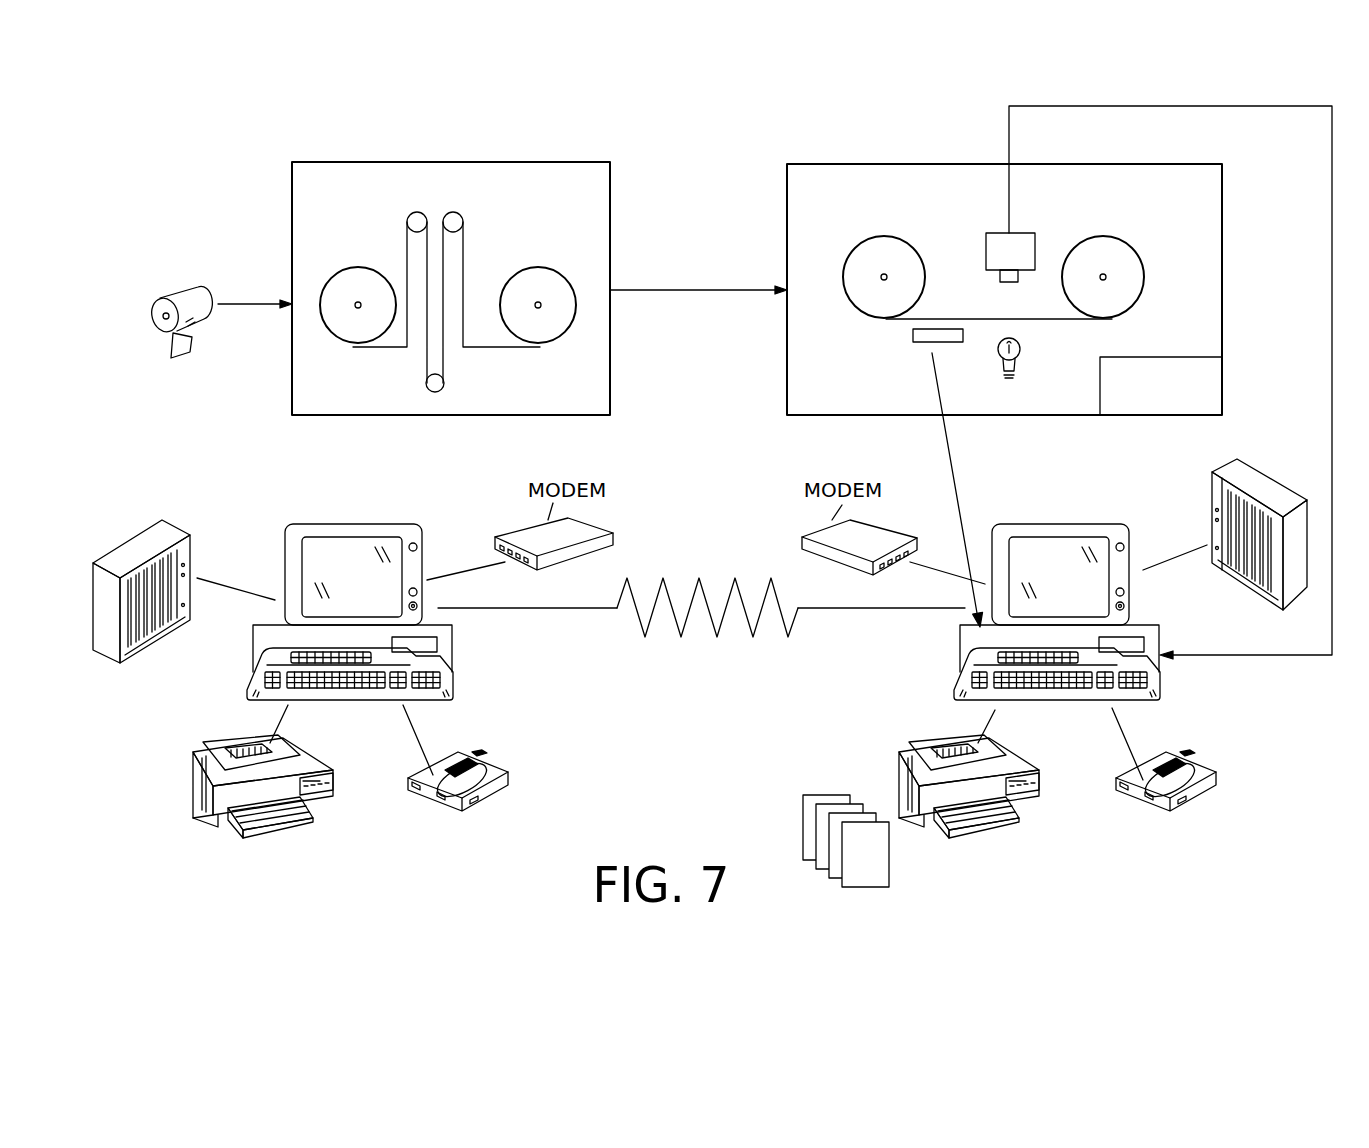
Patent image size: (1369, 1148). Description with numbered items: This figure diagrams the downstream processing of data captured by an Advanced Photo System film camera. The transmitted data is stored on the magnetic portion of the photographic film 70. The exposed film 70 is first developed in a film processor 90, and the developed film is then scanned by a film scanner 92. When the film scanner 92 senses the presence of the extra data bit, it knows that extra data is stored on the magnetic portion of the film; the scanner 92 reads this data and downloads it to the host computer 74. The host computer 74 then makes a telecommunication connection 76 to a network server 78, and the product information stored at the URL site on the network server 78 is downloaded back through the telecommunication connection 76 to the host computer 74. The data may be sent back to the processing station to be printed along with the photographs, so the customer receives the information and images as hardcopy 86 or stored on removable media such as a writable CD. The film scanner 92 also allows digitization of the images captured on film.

The photographic film 70 is at (175, 290).
The film processor 90 is at (450, 162).
The film scanner 92 is at (870, 164).
The telecommunication connection 76 is at (700, 580).
The network server 78 is at (352, 524).
The host computer 74 is at (1028, 525).
The hardcopy 86 is at (828, 795).